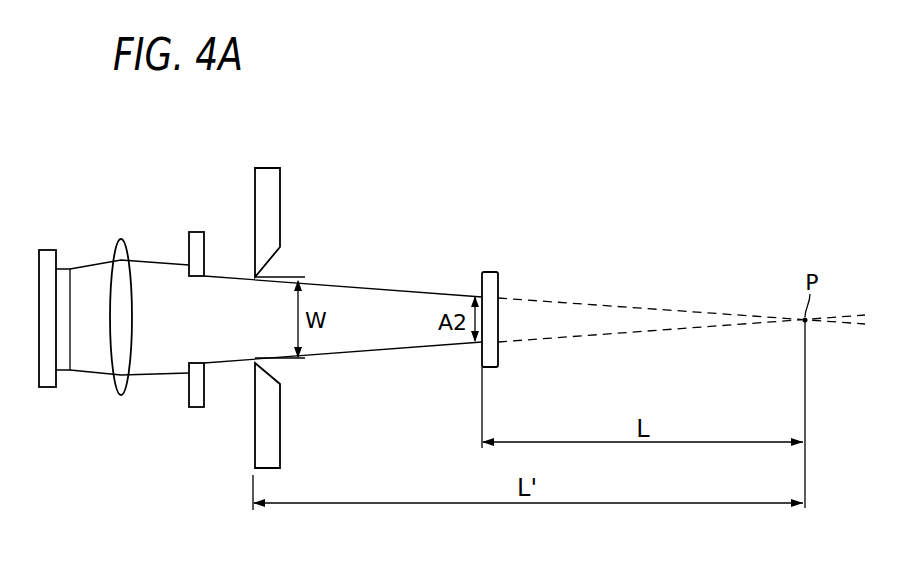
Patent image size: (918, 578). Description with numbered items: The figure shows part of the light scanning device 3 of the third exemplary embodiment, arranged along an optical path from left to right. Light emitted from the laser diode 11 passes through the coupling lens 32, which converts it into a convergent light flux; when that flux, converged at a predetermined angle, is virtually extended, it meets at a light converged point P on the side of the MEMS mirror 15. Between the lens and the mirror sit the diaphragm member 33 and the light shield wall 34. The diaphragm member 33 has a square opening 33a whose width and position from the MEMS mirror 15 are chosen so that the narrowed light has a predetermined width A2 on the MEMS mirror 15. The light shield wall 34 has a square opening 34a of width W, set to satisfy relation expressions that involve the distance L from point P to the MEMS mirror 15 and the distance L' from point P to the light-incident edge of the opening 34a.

The laser diode 11 is at (47, 249).
The coupling lens 32 is at (122, 240).
The diaphragm member 33 is at (198, 232).
The opening 33a is at (192, 362).
The light shield wall 34 is at (280, 211).
The opening 34a is at (264, 380).
The MEMS mirror 15 is at (490, 271).
The light scanning device 3 is at (604, 211).